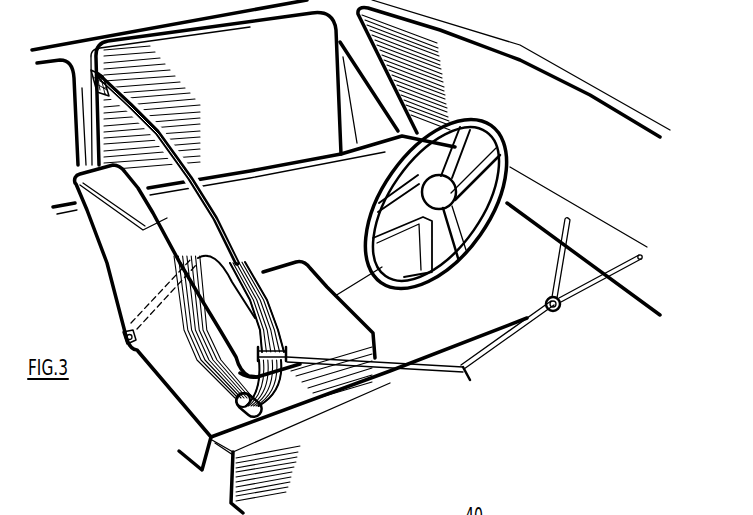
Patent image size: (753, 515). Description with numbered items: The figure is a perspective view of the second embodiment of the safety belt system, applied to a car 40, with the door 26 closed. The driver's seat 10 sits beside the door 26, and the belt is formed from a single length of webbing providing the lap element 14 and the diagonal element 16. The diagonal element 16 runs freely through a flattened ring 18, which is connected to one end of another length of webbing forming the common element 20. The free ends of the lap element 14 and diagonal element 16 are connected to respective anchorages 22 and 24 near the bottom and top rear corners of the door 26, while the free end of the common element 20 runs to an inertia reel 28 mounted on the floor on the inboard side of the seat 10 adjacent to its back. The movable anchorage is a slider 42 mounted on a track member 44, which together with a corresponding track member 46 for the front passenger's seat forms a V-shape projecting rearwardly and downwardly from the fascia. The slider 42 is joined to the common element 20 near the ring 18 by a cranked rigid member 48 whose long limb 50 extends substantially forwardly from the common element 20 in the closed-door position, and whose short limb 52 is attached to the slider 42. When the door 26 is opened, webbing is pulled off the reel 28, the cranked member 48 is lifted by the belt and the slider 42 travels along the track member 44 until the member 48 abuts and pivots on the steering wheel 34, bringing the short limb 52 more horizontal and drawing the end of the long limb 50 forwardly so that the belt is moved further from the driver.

The driver's seat 10 is at (94, 221).
The lap element 14 is at (214, 257).
The diagonal element 16 is at (178, 154).
The flattened ring 18 is at (280, 348).
The common element 20 is at (278, 393).
The anchorage 22 is at (124, 347).
The anchorage 24 is at (93, 85).
The door 26 is at (221, 224).
The inertia reel 28 is at (211, 437).
The steering wheel 34 is at (479, 118).
The car 40 is at (518, 44).
The slider 42 is at (547, 297).
The track member 44 is at (557, 265).
The track member 46 is at (593, 288).
The cranked rigid member 48 is at (465, 374).
The long limb 50 is at (396, 366).
The short limb 52 is at (513, 337).